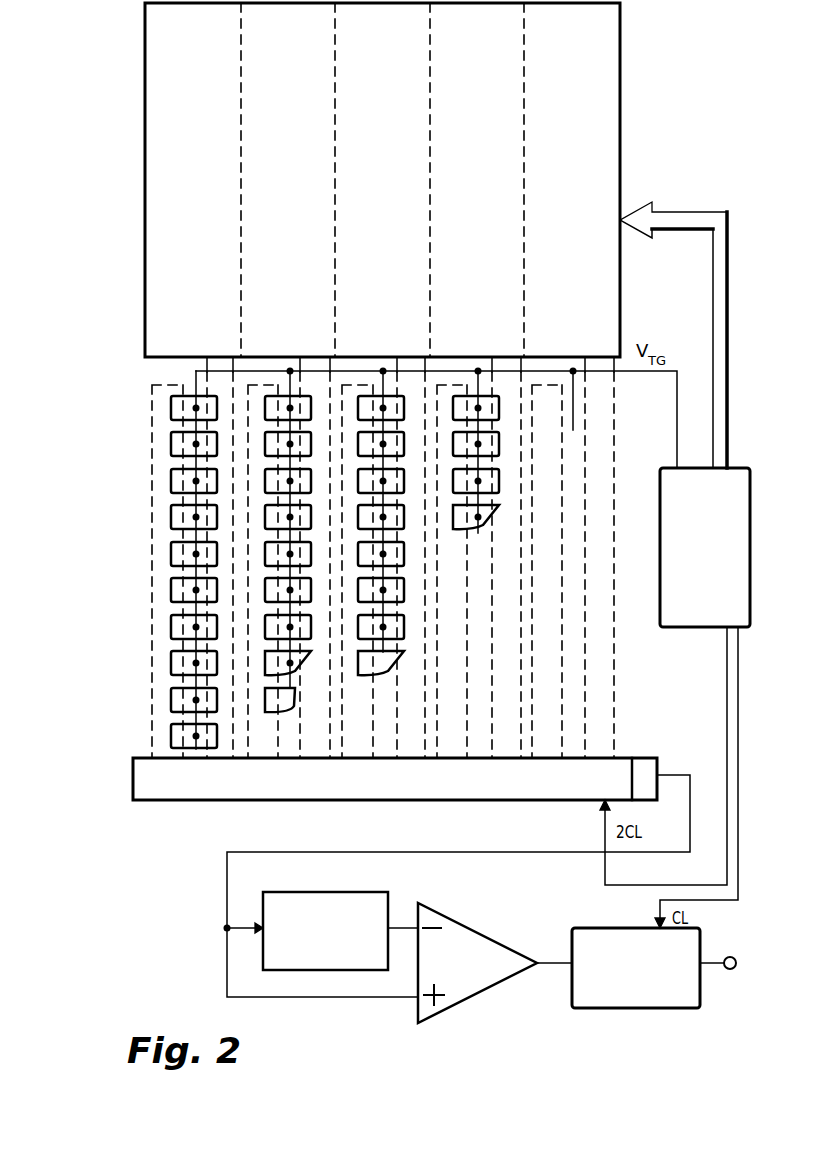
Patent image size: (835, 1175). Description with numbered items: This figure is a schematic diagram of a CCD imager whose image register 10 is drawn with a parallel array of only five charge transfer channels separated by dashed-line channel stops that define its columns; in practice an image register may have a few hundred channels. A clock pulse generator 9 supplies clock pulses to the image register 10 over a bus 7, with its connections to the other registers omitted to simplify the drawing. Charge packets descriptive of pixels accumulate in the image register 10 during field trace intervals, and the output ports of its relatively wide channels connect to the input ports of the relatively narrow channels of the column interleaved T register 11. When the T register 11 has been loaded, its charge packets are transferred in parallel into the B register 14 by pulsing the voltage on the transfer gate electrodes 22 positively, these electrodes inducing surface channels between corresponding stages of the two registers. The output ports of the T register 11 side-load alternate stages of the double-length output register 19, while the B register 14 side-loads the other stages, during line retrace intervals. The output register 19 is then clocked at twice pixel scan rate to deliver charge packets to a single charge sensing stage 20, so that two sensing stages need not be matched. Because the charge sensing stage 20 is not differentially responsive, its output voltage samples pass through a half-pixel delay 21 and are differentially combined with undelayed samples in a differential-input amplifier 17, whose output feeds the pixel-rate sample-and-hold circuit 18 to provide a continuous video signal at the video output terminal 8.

The image register 10 is at (125, 325).
The bus 7 is at (688, 215).
The T register 11 is at (319, 557).
The B register 14 is at (383, 557).
The transfer gate electrodes 22 is at (110, 752).
The double-length output register 19 is at (133, 793).
The charge sensing stage 20 is at (632, 758).
The clock pulse generator 9 is at (683, 627).
The half-pixel delay 21 is at (367, 892).
The differential-input amplifier 17 is at (474, 938).
The pixel-rate sample-and-hold circuit 18 is at (595, 1008).
The video output terminal 8 is at (733, 969).